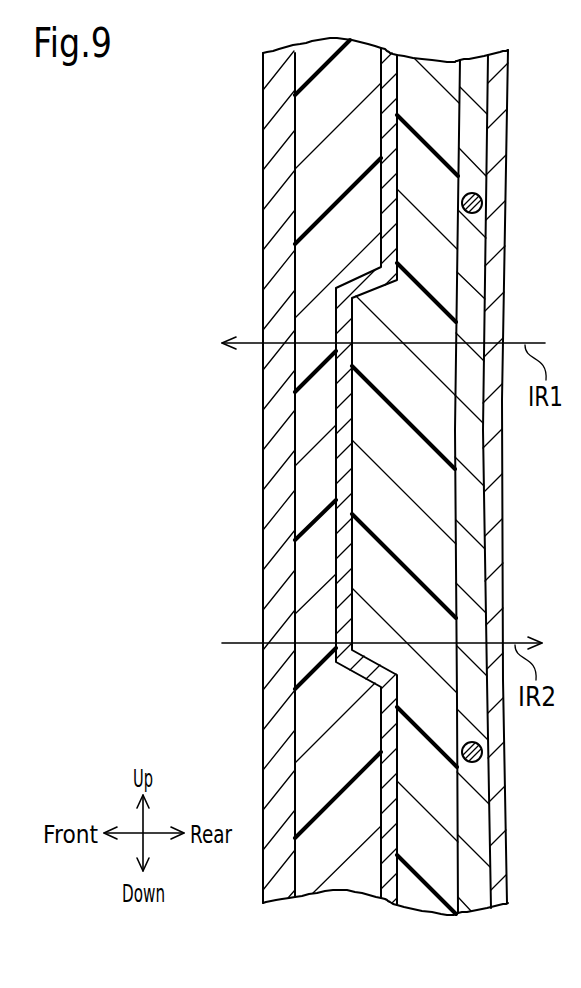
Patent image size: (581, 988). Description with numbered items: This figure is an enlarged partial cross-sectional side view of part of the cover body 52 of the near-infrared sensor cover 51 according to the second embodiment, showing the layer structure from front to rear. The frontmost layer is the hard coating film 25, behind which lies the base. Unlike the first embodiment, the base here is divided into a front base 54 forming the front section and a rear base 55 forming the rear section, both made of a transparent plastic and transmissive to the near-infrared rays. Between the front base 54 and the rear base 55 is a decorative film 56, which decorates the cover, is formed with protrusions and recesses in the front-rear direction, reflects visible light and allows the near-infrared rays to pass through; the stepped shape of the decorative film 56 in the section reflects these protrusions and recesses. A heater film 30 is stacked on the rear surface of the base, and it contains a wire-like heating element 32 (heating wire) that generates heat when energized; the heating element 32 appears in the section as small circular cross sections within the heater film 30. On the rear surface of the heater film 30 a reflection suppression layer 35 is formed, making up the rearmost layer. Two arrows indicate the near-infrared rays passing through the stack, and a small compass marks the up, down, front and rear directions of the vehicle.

The cover body 52 is at (256, 105).
The near-infrared sensor cover 51 is at (355, 470).
The hard coating film 25 is at (275, 146).
The front base 54 is at (307, 255).
The decorative film 56 is at (387, 92).
The rear base 55 is at (450, 135).
The heater film 30 is at (470, 258).
The reflection suppression layer 35 is at (494, 437).
The heating element 32 is at (482, 203).